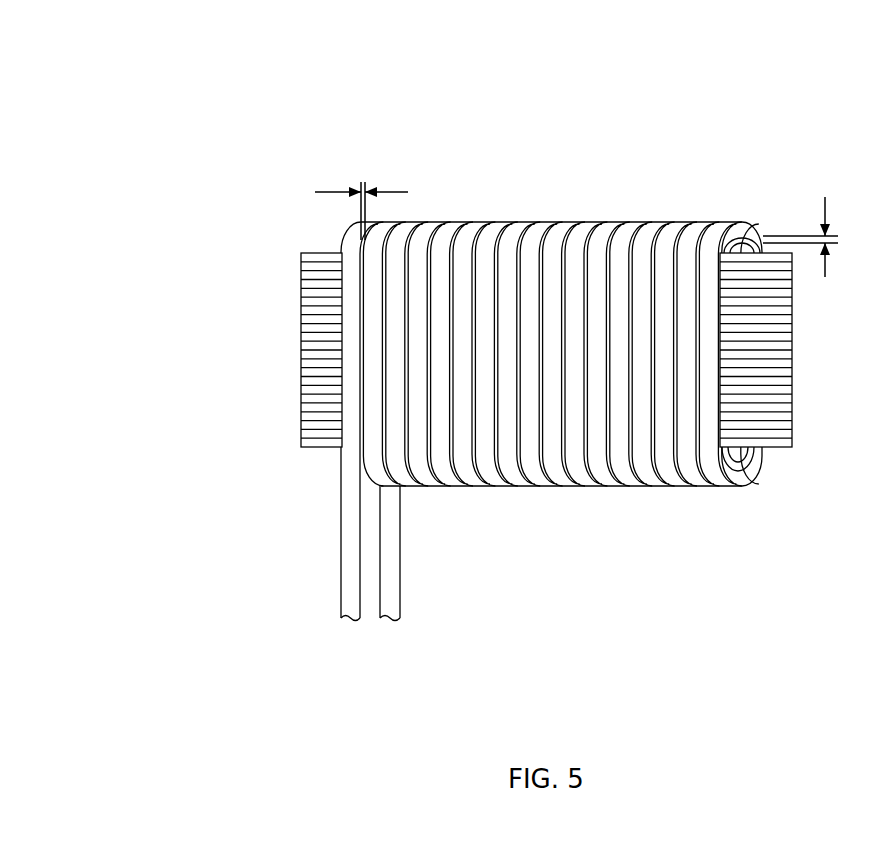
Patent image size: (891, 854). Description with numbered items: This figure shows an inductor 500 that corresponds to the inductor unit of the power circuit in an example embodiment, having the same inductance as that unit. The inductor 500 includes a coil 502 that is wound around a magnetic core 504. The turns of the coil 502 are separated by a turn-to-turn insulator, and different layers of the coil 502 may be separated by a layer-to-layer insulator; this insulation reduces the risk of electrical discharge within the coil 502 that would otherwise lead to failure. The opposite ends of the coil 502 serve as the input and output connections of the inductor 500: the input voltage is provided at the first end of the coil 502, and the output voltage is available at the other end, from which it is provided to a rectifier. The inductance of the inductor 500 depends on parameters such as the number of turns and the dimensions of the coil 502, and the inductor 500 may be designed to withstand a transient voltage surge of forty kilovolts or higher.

The inductor 500 is at (122, 78).
The coil 502 is at (350, 447).
The magnetic core 504 is at (312, 293).